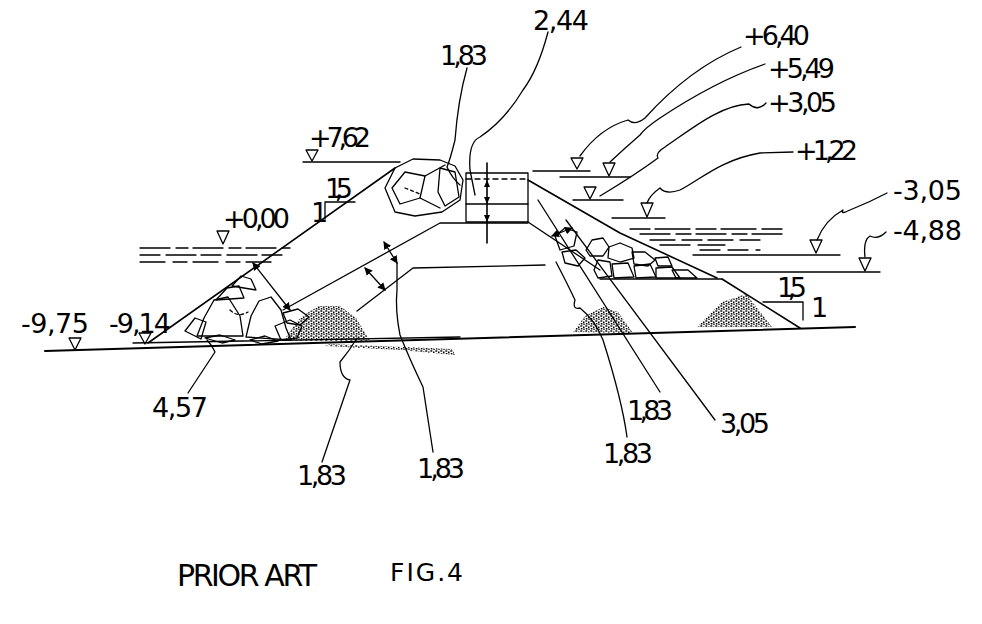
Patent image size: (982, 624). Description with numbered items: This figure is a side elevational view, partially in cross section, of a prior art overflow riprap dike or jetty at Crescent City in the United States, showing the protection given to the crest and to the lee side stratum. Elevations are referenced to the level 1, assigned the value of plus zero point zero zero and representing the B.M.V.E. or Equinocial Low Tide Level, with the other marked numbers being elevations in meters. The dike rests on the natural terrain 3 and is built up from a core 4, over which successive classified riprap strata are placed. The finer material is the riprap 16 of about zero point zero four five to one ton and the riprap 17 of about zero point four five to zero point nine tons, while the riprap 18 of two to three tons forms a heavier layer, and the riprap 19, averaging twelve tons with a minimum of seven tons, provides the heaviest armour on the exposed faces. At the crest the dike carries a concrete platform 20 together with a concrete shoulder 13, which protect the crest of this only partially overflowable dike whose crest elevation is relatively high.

The B.M.V.E. level 1 is at (172, 248).
The natural terrain 3 is at (460, 340).
The core 4 is at (400, 327).
The concrete shoulder 13 is at (530, 168).
The 0.045 to 1.0 t riprap 16 is at (477, 250).
The 0.45 to 0.90 t riprap 17 is at (563, 267).
The 2 to 3 t riprap 18 is at (453, 210).
The riprap of an average of 12.0 t 19 is at (603, 218).
The concrete platform 20 is at (513, 190).